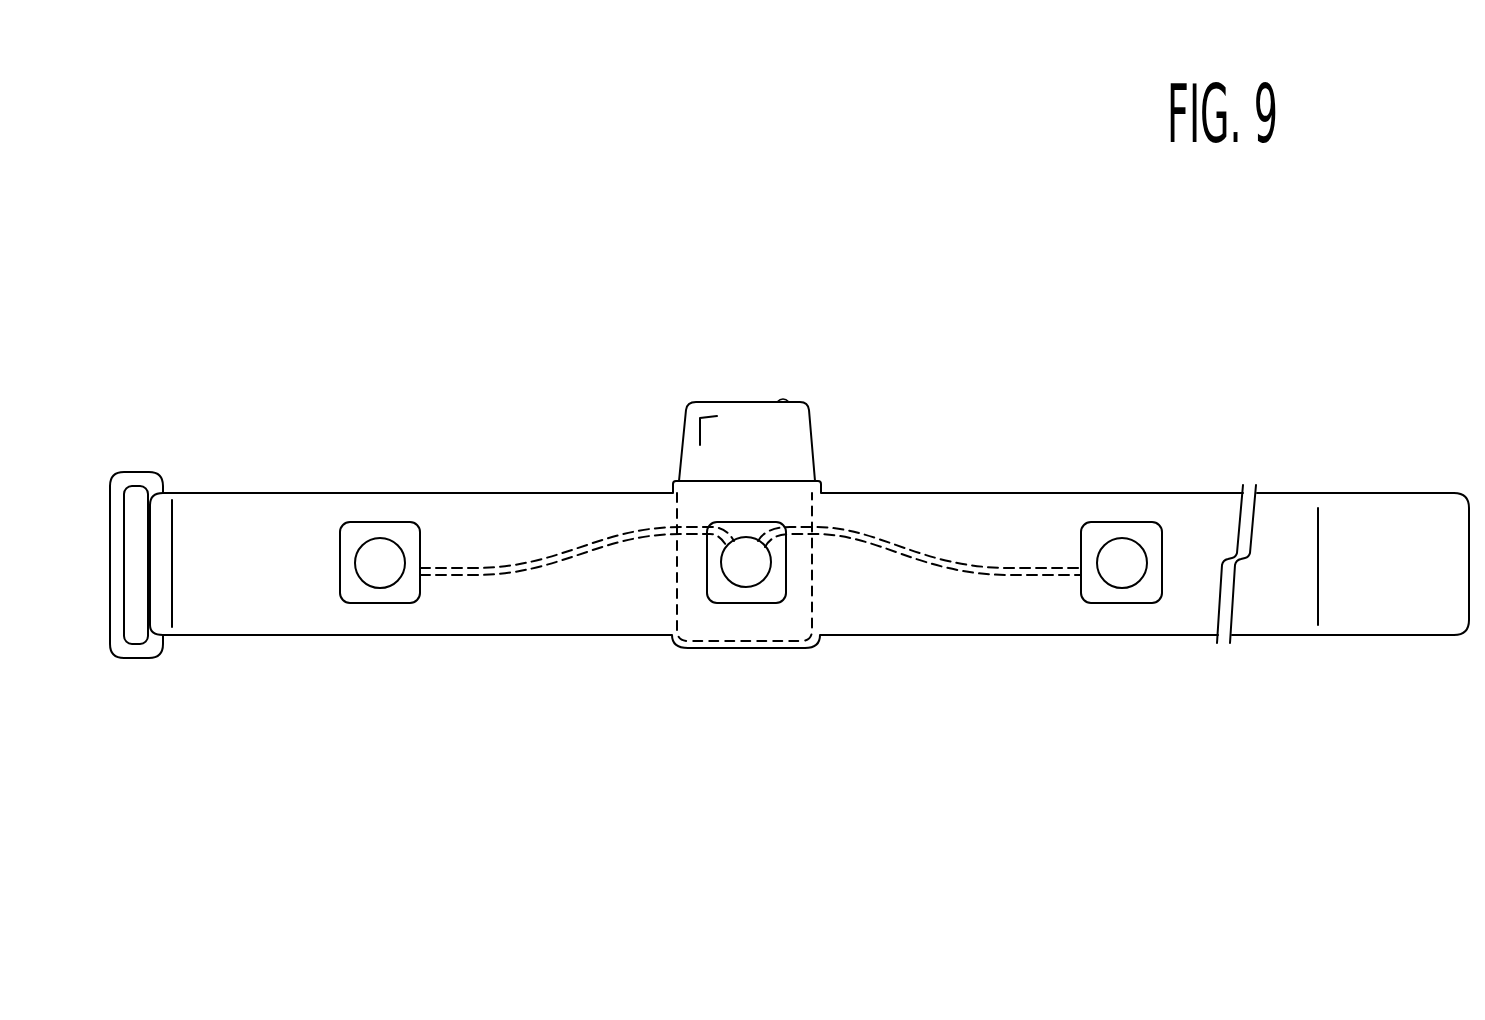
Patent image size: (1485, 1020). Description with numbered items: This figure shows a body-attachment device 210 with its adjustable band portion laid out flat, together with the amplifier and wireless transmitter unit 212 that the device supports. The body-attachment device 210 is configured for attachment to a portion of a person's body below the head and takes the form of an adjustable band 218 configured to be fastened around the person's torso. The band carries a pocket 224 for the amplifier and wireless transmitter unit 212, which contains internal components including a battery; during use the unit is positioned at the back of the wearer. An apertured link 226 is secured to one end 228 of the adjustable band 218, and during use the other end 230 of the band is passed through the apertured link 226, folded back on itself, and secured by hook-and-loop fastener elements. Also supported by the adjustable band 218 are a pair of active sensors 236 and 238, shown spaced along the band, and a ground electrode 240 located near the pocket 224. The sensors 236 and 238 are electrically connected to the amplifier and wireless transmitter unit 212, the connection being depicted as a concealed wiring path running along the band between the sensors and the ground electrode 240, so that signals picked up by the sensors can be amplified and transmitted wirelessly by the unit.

The body-attachment device 210 is at (998, 395).
The amplifier and wireless transmitter unit 212 is at (795, 417).
The adjustable band 218 is at (516, 610).
The pocket 224 is at (737, 625).
The apertured link 226 is at (140, 652).
The one end 228 is at (222, 507).
The other end 230 is at (1393, 605).
The active sensor 236 is at (381, 540).
The active sensor 238 is at (1124, 547).
The ground electrode 240 is at (743, 548).